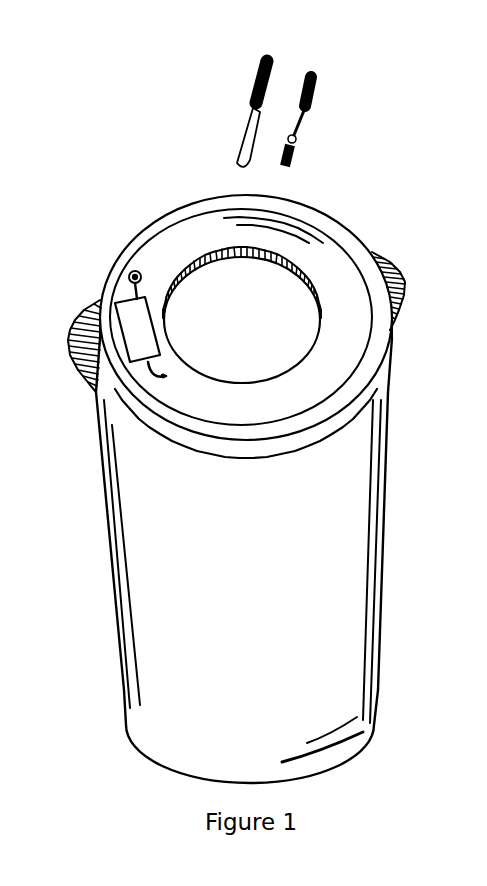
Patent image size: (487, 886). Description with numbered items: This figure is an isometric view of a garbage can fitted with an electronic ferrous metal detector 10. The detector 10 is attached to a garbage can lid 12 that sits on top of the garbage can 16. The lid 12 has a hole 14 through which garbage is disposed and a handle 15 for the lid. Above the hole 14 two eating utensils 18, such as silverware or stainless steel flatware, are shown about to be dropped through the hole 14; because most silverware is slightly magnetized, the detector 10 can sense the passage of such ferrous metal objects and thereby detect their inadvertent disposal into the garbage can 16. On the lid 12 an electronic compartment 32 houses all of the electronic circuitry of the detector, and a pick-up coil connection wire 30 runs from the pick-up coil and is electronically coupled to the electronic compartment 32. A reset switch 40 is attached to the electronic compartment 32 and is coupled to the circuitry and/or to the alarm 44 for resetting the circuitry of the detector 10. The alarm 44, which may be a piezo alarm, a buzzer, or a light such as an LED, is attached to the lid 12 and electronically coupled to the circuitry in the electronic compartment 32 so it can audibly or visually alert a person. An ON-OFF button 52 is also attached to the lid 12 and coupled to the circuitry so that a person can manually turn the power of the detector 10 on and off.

The electronic ferrous metal detector 10 is at (177, 124).
The garbage can lid 12 is at (340, 268).
The hole 14 is at (267, 297).
The handle 15 is at (400, 270).
The garbage can 16 is at (208, 545).
The eating utensil 18 is at (253, 110).
The pick-up coil connection wire 30 is at (197, 375).
The electronic compartment 32 is at (132, 328).
The reset switch 40 is at (165, 380).
The alarm 44 is at (136, 271).
The ON-OFF button 52 is at (137, 300).